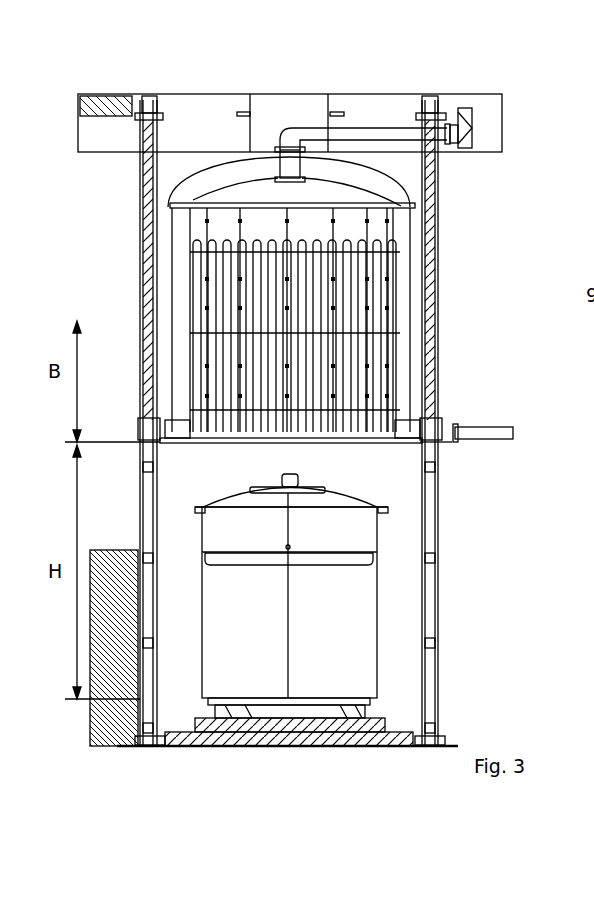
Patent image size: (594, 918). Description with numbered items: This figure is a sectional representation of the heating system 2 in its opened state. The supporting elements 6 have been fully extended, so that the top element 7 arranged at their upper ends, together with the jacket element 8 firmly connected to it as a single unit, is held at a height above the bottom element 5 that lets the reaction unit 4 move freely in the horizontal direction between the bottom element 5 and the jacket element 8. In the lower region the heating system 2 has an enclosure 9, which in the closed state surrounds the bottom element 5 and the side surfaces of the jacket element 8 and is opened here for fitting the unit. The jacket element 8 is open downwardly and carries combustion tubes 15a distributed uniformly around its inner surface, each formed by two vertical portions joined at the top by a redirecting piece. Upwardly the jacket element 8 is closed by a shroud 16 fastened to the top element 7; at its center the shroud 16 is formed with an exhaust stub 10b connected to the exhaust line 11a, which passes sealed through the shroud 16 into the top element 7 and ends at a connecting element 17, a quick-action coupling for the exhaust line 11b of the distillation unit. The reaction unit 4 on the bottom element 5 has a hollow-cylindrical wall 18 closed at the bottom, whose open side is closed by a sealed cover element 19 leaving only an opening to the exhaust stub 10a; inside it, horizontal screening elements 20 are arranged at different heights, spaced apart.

The heating system 2 is at (551, 132).
The reaction unit 4 is at (260, 622).
The bottom element 5 is at (228, 743).
The supporting elements 6 is at (143, 343).
The top element 7 is at (217, 126).
The jacket element 8 is at (178, 291).
The enclosure 9 is at (120, 552).
The exhaust stub 10a is at (283, 478).
The exhaust stub 10b is at (305, 181).
The exhaust line 11a is at (357, 137).
The exhaust line 11b is at (505, 437).
The combustion tubes 15a is at (353, 350).
The shroud 16 is at (188, 194).
The connecting element 17 is at (464, 130).
The wall 18 is at (378, 683).
The cover element 19 is at (362, 506).
The screening elements 20 is at (278, 558).